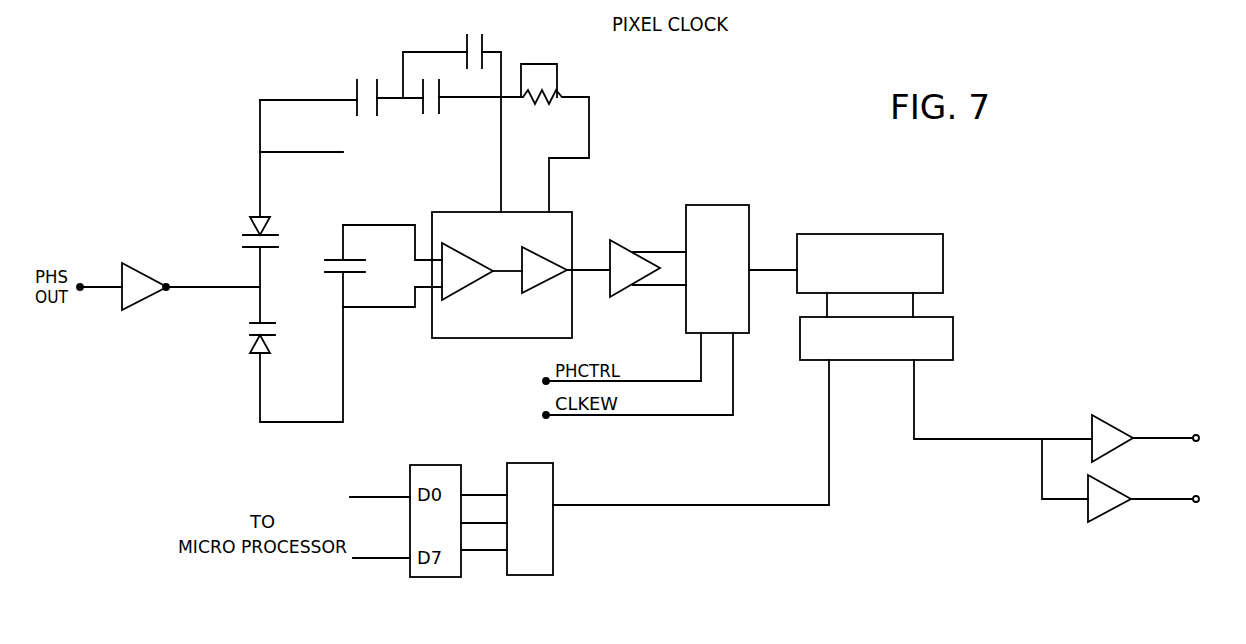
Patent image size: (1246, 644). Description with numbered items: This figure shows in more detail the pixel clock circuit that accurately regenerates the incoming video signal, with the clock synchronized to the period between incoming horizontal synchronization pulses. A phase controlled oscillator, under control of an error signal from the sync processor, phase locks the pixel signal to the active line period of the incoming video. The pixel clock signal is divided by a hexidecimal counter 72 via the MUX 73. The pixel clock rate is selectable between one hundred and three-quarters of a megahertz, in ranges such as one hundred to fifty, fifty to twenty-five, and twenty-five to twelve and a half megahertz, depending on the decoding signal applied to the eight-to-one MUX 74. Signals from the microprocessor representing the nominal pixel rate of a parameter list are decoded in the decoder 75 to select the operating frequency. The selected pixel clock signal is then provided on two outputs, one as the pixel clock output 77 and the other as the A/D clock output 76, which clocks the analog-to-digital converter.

The hexidecimal counter 72 is at (925, 234).
The MUX 73 is at (744, 205).
The 8 to 1 MUX 74 is at (953, 342).
The decoder 75 is at (535, 575).
The A/D clock output 76 is at (1199, 502).
The pixel clock output 77 is at (1199, 436).